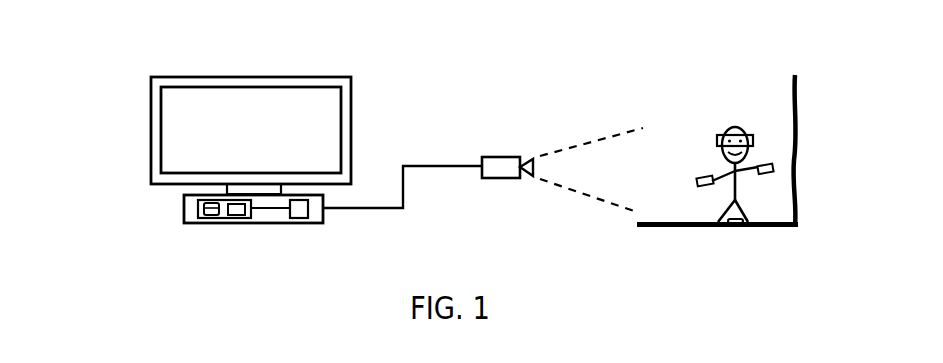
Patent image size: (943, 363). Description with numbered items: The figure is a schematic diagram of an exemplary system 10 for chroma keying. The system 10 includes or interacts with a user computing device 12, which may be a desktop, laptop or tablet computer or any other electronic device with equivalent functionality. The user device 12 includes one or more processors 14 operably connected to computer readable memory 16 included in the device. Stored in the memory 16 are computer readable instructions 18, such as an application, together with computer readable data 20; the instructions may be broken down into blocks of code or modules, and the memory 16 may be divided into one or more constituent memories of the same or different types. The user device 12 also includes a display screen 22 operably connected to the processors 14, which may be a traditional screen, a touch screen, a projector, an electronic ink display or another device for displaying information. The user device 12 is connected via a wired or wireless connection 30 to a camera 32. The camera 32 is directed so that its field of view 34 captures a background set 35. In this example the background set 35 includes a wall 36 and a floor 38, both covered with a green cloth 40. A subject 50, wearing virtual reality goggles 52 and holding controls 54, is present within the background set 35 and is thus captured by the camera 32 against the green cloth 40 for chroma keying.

The system 10 is at (98, 75).
The user computing device 12 is at (271, 229).
The processors 14 is at (308, 218).
The computer readable memory 16 is at (253, 211).
The computer readable instructions 18 is at (238, 216).
The computer readable data 20 is at (207, 216).
The display screen 22 is at (185, 174).
The connection 30 is at (432, 165).
The camera 32 is at (498, 157).
The field of view 34 is at (583, 143).
The background set 35 is at (782, 60).
The wall 36 is at (797, 128).
The floor 38 is at (738, 226).
The green cloth 40 is at (790, 130).
The subject 50 is at (743, 151).
The virtual reality goggles 52 is at (717, 142).
The controls 54 is at (773, 172).